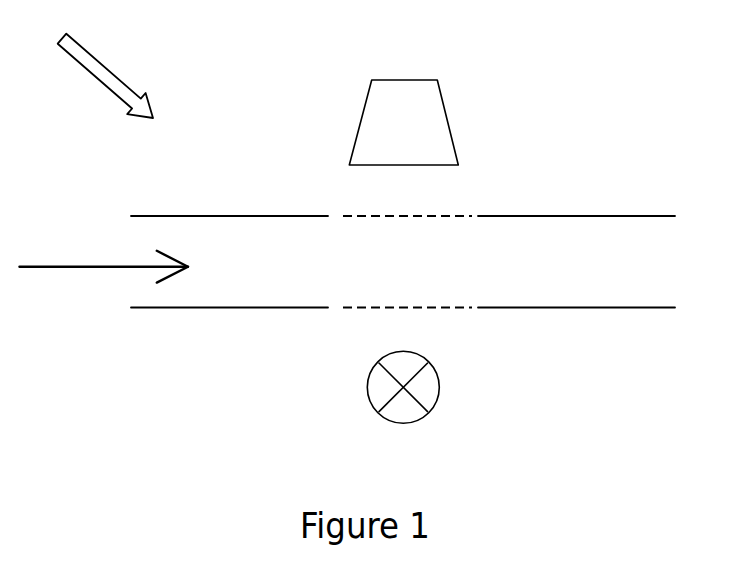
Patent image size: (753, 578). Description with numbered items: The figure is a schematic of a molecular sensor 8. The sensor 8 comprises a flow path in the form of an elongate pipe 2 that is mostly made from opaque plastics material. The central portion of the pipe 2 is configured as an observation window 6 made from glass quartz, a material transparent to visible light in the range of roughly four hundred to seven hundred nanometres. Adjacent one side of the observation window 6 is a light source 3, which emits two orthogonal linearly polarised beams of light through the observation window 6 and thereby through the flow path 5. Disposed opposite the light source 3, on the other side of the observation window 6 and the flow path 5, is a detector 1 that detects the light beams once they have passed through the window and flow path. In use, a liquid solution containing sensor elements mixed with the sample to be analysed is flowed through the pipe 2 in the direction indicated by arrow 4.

The detector 1 is at (456, 97).
The elongate pipe 2 is at (617, 207).
The light source 3 is at (358, 412).
The arrow 4 is at (104, 256).
The flow path 5 is at (276, 275).
The observation window 6 is at (358, 208).
The molecular sensor 8 is at (93, 62).